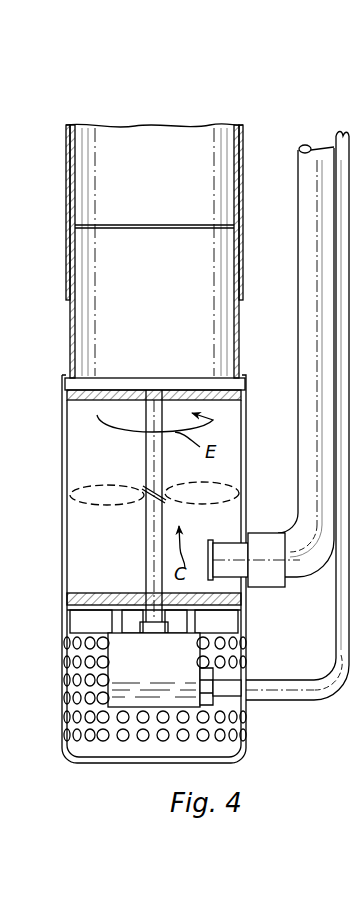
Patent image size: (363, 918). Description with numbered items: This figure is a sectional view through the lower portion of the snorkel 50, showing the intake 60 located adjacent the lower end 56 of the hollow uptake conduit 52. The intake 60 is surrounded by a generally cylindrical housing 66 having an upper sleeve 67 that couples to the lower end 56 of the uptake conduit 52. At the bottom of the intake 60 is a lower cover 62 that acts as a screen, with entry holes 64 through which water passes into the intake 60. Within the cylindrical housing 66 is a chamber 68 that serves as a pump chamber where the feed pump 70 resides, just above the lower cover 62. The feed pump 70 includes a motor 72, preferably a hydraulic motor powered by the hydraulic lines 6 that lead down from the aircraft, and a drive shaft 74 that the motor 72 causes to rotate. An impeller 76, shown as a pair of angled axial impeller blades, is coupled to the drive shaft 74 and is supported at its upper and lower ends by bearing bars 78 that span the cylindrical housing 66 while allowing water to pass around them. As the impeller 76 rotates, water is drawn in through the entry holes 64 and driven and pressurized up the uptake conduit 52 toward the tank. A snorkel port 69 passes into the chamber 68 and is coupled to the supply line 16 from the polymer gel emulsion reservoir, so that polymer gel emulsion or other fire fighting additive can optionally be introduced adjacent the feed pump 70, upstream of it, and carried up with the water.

The snorkel 50 is at (253, 128).
The uptake conduit 52 is at (168, 161).
The lower end 56 is at (68, 290).
The upper sleeve 67 is at (142, 232).
The supply line 16 is at (313, 234).
The bearing bars 78 is at (102, 388).
The cylindrical housing 66 is at (62, 428).
The chamber 68 is at (100, 464).
The impeller 76 is at (150, 488).
The drive shaft 74 is at (146, 563).
The feed pump 70 is at (113, 540).
The snorkel port 69 is at (232, 546).
The intake 60 is at (48, 598).
The hydraulic lines 6 is at (330, 618).
The motor 72 is at (165, 674).
The lower cover 62 is at (64, 762).
The entry holes 64 is at (140, 745).